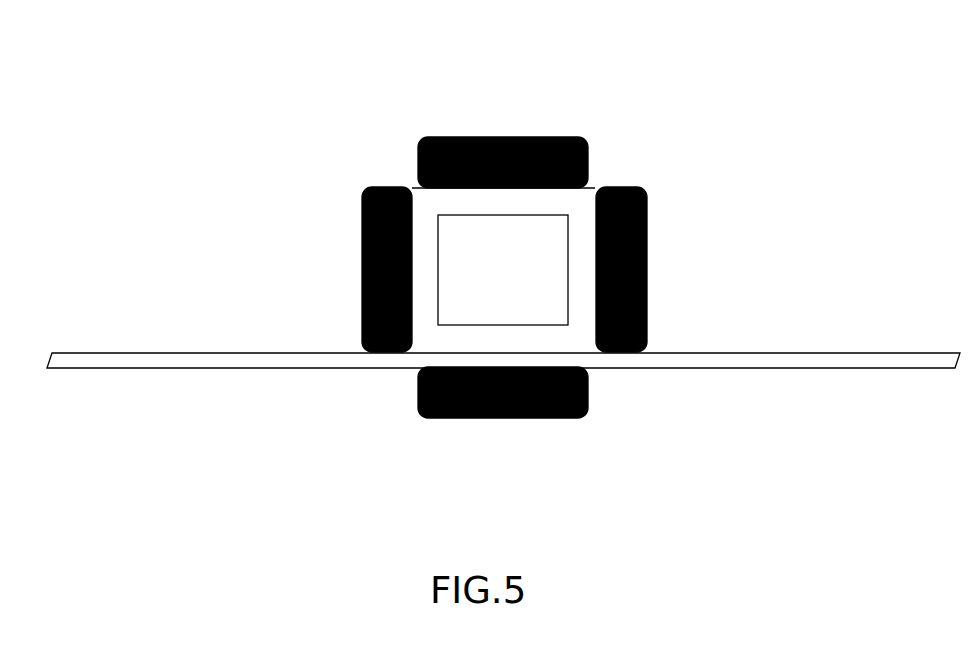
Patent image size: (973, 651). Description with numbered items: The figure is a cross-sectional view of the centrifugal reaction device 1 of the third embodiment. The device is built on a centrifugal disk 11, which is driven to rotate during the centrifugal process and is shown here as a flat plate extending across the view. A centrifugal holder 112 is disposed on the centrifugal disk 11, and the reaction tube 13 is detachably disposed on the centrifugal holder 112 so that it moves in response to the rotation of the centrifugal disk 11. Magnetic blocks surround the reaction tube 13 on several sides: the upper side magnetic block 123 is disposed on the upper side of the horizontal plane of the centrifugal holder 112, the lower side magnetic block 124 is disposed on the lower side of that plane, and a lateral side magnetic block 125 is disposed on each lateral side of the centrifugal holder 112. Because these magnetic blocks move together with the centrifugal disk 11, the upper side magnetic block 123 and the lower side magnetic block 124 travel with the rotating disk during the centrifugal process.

The centrifugal reaction device 1 is at (142, 87).
The centrifugal disk 11 is at (248, 353).
The centrifugal holder 112 is at (423, 345).
The reaction tube 13 is at (438, 228).
The upper side magnetic block 123 is at (508, 135).
The lower side magnetic block 124 is at (528, 418).
The lateral side magnetic block 125 is at (362, 243).